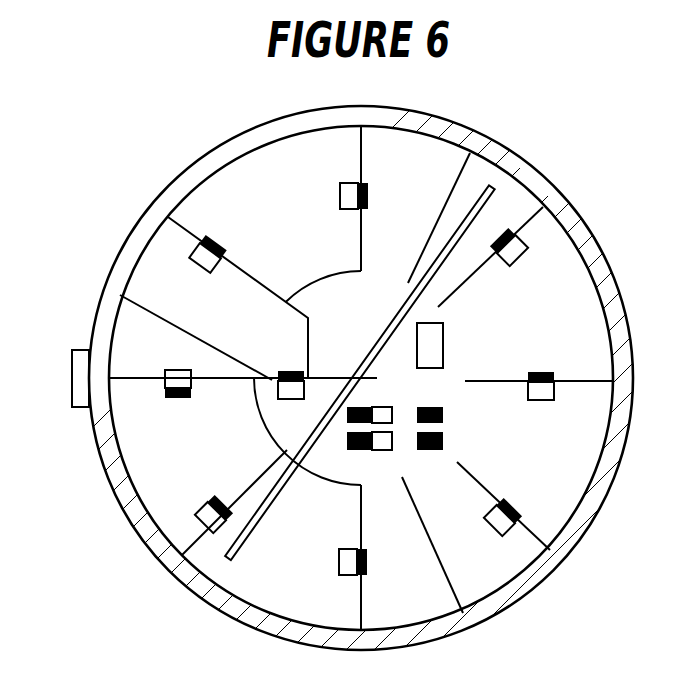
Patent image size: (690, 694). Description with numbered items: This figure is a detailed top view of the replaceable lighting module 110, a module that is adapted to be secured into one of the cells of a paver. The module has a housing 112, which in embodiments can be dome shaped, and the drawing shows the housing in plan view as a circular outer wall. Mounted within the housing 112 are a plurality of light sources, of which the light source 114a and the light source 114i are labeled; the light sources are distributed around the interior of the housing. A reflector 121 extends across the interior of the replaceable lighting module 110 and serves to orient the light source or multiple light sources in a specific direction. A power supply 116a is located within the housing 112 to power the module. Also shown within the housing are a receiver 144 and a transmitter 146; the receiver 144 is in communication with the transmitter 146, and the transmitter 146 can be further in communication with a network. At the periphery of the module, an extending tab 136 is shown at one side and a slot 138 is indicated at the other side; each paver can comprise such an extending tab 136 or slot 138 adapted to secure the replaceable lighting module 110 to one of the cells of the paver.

The replaceable lighting module 110 is at (526, 101).
The housing 112 is at (243, 132).
The light source 114a is at (340, 196).
The light source 114i is at (514, 254).
The power supply 116a is at (445, 343).
The reflector 121 is at (394, 321).
The extending tab 136 is at (72, 380).
The slot 138 is at (627, 398).
The receiver 144 is at (444, 414).
The transmitter 146 is at (444, 442).